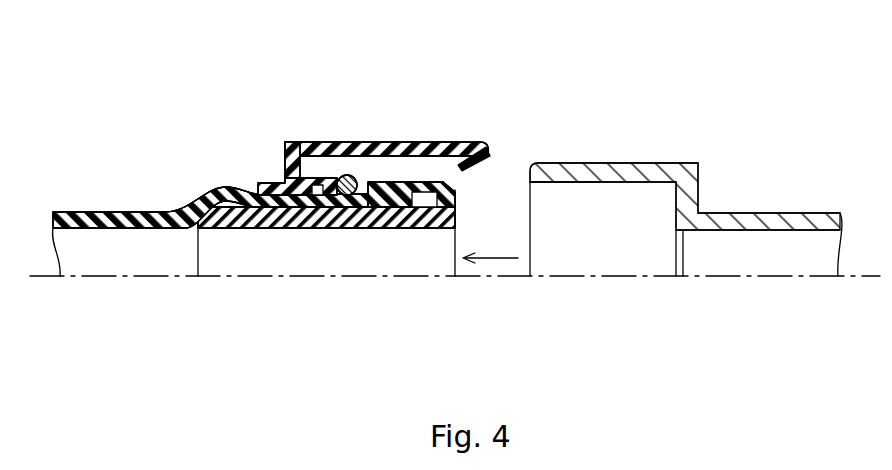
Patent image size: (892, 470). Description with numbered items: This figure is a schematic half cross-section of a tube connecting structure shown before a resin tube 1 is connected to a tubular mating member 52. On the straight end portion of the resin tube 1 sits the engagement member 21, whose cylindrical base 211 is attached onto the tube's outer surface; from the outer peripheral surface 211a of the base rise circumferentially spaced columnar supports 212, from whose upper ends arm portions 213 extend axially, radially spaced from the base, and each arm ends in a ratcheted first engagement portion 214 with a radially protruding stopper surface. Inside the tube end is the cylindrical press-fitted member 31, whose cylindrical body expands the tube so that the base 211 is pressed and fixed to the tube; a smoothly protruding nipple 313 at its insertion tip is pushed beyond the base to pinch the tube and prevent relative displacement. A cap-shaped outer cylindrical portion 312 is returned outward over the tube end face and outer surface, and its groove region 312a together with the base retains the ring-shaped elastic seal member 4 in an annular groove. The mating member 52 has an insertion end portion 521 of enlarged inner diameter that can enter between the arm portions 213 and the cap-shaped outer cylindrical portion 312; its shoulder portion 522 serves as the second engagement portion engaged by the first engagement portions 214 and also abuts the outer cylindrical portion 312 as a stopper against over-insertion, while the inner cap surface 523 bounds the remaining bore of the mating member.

The resin tube 1 is at (97, 210).
The engagement member 21 is at (370, 124).
The cylindrical base 211 is at (266, 183).
The outer peripheral surface 211a is at (336, 160).
The supports 212 is at (287, 143).
The arm portions 213 is at (410, 142).
The first engagement portion 214 is at (488, 141).
The press-fitted member 31 is at (240, 230).
The cap-shaped outer cylindrical portion 312 is at (442, 120).
The flange recess 312a is at (389, 188).
The nipple 313 is at (317, 220).
The ring-shaped elastic seal member 4 is at (353, 176).
The tubular mating member 52 is at (686, 186).
The insertion end portion 521 is at (597, 167).
The shoulder portion 522 is at (698, 162).
The cap inner surface 523 is at (582, 183).